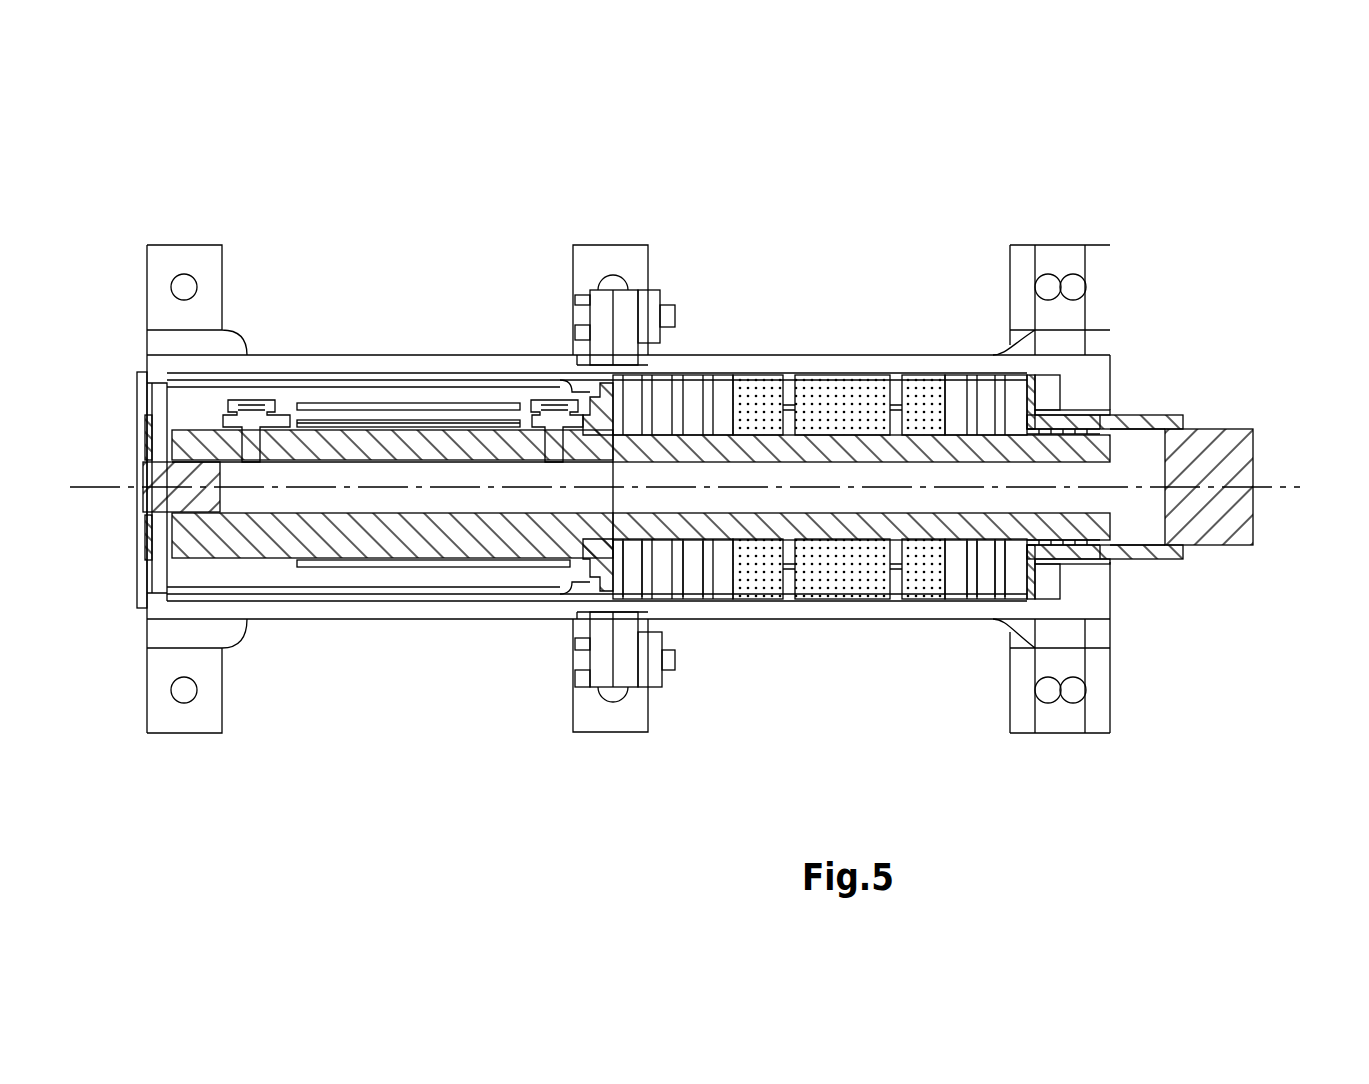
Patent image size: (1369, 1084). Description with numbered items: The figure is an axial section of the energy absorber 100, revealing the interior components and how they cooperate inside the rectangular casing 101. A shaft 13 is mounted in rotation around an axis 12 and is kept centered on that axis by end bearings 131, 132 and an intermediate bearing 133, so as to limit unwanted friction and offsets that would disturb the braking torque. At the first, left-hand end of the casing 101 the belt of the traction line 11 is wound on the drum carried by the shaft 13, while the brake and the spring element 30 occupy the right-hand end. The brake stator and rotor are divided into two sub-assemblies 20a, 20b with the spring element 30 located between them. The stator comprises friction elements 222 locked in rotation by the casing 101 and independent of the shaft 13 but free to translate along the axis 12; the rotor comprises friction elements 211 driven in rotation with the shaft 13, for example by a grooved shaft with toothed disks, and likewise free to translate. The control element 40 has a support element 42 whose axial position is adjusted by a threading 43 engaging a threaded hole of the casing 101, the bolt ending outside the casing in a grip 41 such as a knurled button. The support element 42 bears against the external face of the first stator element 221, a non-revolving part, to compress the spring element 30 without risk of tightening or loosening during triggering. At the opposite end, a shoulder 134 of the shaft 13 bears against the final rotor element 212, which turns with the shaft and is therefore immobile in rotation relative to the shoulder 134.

The energy absorber 100 is at (893, 212).
The casing 101 is at (412, 352).
The traction line 11 is at (358, 565).
The axis 12 is at (1282, 489).
The shaft 13 is at (853, 447).
The end bearing 131 is at (167, 470).
The end bearing 132 is at (1110, 563).
The intermediate bearing 133 is at (578, 578).
The shoulder 134 is at (598, 396).
The brake sub-assembly 20a is at (696, 393).
The brake sub-assembly 20b is at (977, 400).
The rotor friction elements 211 is at (968, 572).
The final rotor element 212 is at (620, 583).
The first stator element 221 is at (1015, 577).
The stator friction elements 222 is at (692, 577).
The spring element 30 is at (862, 588).
The control element 40 is at (1239, 565).
The grip 41 is at (1252, 432).
The support element 42 is at (1032, 392).
The threading 43 is at (1097, 414).